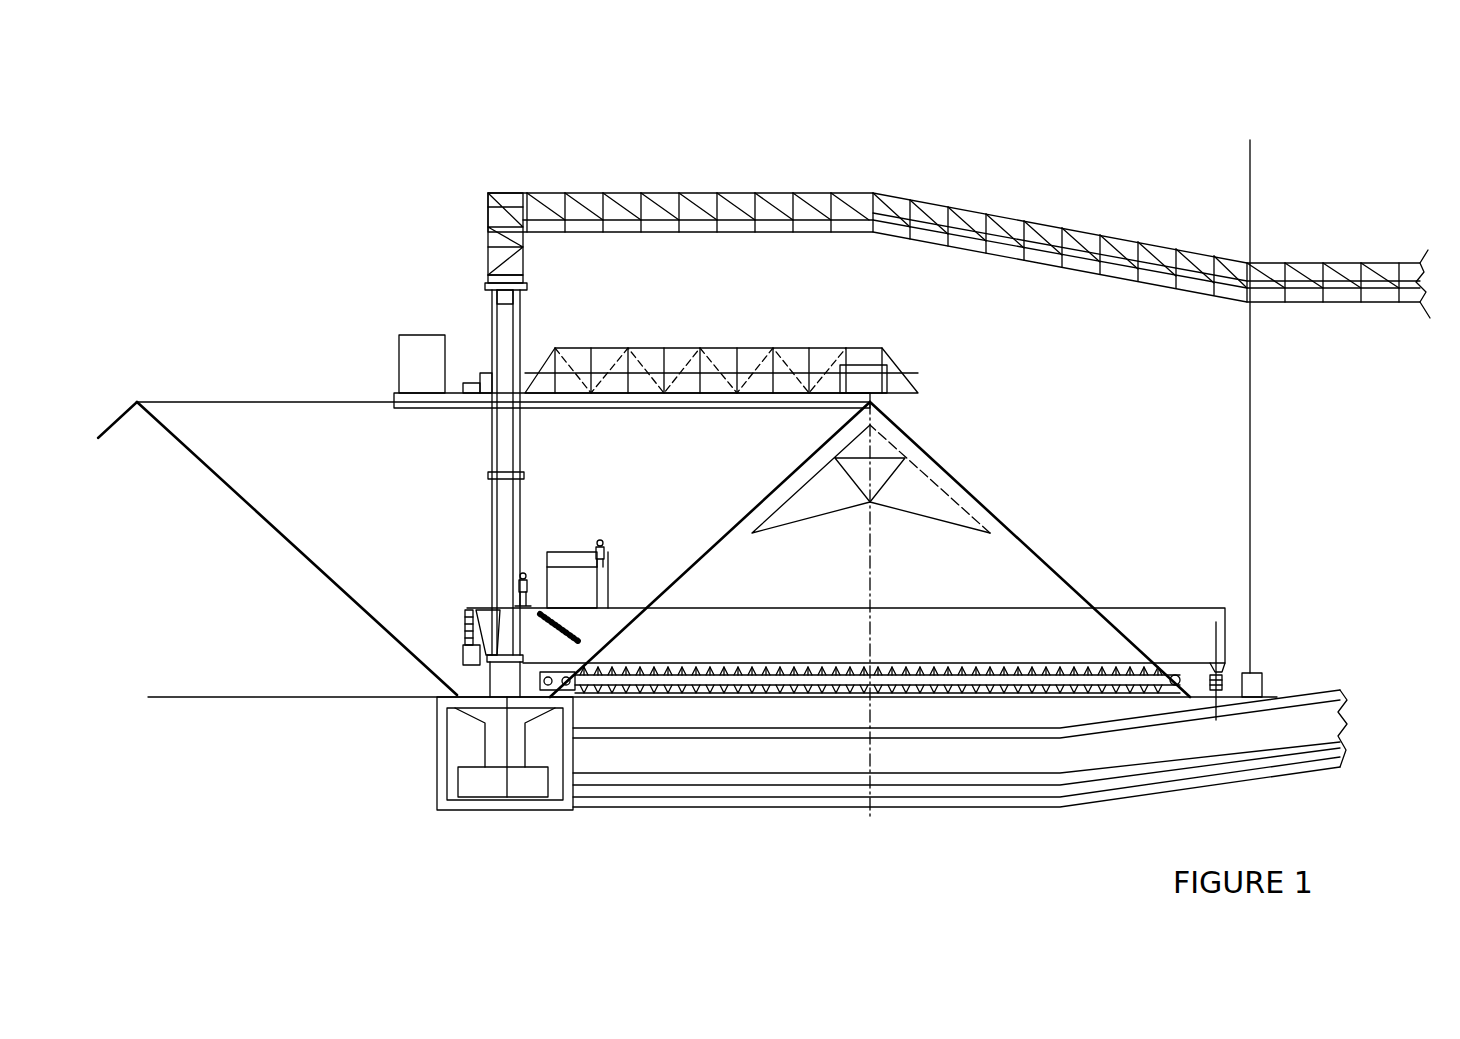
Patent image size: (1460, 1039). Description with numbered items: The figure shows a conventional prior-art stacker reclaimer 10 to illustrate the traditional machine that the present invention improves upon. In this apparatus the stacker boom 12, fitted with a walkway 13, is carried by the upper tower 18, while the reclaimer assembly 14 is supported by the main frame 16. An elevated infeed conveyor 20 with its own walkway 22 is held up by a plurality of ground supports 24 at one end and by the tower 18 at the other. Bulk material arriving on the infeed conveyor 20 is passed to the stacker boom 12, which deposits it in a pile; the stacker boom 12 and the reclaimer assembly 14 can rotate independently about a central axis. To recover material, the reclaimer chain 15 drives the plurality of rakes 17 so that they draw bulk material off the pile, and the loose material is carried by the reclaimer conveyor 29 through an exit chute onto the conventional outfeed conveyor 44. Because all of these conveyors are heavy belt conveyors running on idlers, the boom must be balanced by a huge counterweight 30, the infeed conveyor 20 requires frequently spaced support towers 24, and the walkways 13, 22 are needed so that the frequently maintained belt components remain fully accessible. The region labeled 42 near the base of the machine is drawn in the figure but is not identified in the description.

The stacker reclaimer 10 is at (370, 256).
The stacker boom 12 is at (768, 355).
The walkway 13 is at (608, 400).
The reclaimer assembly 14 is at (703, 667).
The reclaimer chain 15 is at (805, 666).
The main frame 16 is at (492, 582).
The rakes 17 is at (906, 656).
The upper tower 18 is at (522, 311).
The infeed conveyor 20 is at (612, 213).
The walkway 22 is at (727, 230).
The ground supports 24 is at (1249, 216).
The reclaimer conveyor 29 is at (500, 720).
The counterweight 30 is at (412, 370).
The compartment 42 is at (497, 745).
The outfeed conveyor 44 is at (1160, 770).